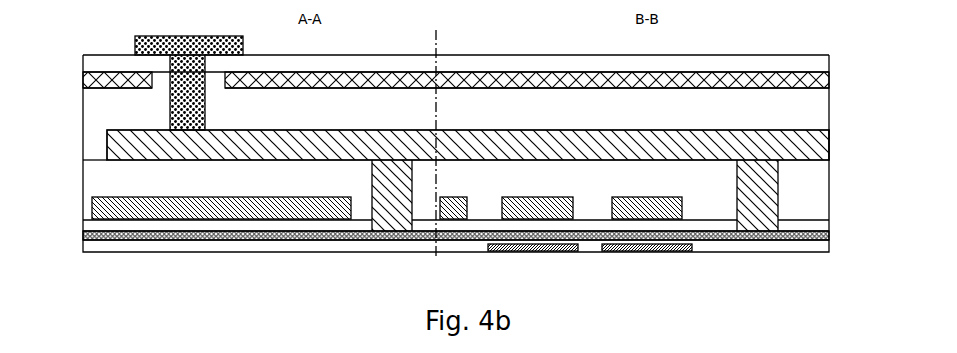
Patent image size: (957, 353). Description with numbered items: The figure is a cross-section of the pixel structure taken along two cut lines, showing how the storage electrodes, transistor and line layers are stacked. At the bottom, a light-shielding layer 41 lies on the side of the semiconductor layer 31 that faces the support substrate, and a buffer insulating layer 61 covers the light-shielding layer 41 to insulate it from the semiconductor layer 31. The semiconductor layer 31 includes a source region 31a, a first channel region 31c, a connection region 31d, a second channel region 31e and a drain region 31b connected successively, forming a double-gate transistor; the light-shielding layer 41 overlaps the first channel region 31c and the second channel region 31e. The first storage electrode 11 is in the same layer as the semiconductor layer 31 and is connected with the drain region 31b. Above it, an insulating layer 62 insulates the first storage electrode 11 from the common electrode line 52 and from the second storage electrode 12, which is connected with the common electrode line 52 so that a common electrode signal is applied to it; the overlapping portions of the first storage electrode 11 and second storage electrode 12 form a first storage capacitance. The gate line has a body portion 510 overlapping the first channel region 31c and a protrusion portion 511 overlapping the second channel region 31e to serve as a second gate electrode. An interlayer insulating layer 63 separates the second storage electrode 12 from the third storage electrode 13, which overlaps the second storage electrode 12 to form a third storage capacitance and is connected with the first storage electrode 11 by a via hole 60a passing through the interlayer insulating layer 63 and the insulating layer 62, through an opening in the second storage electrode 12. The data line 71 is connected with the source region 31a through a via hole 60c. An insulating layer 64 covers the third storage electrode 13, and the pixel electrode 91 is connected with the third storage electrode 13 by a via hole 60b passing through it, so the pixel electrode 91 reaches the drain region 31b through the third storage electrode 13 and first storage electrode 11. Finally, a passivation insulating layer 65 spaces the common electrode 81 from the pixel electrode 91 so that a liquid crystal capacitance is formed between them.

The first storage electrode 11 is at (177, 241).
The second storage electrode 12 is at (92, 212).
The third storage electrode 13 is at (120, 146).
The semiconductor layer 31 is at (829, 237).
The source region 31a is at (760, 243).
The drain region 31b is at (484, 250).
The first channel region 31c is at (690, 252).
The connection region 31d is at (593, 243).
The second channel region 31e is at (553, 252).
The light-shielding layer 41 is at (668, 250).
The common electrode line 52 is at (460, 218).
The body portion 510 is at (632, 218).
The protrusion portion 511 is at (537, 220).
The via hole 60a is at (372, 197).
The via hole 60b is at (168, 108).
The via hole 60c is at (778, 189).
The buffer insulating layer 61 is at (829, 250).
The insulating layer 62 is at (829, 225).
The interlayer insulating layer 63 is at (829, 188).
The insulating layer 64 is at (829, 108).
The passivation insulating layer 65 is at (829, 60).
The data line 71 is at (815, 147).
The common electrode 81 is at (829, 82).
The pixel electrode 91 is at (135, 46).